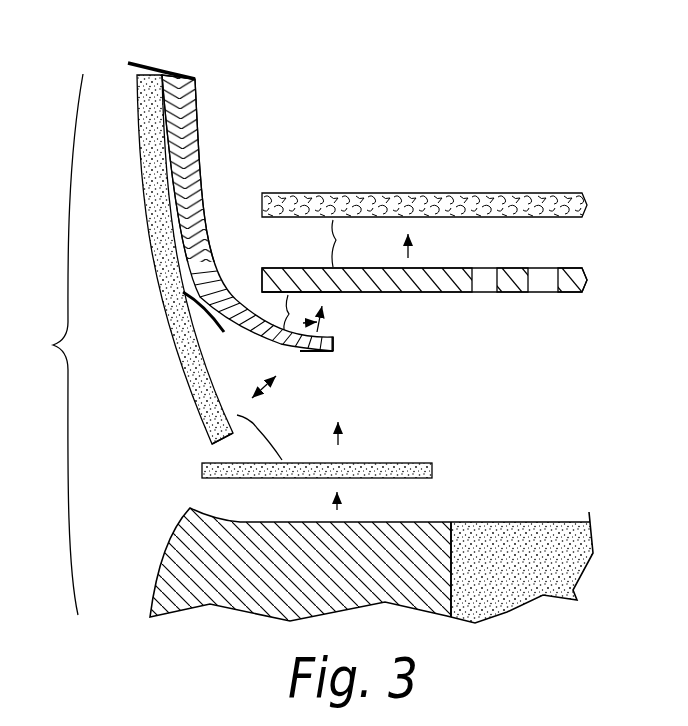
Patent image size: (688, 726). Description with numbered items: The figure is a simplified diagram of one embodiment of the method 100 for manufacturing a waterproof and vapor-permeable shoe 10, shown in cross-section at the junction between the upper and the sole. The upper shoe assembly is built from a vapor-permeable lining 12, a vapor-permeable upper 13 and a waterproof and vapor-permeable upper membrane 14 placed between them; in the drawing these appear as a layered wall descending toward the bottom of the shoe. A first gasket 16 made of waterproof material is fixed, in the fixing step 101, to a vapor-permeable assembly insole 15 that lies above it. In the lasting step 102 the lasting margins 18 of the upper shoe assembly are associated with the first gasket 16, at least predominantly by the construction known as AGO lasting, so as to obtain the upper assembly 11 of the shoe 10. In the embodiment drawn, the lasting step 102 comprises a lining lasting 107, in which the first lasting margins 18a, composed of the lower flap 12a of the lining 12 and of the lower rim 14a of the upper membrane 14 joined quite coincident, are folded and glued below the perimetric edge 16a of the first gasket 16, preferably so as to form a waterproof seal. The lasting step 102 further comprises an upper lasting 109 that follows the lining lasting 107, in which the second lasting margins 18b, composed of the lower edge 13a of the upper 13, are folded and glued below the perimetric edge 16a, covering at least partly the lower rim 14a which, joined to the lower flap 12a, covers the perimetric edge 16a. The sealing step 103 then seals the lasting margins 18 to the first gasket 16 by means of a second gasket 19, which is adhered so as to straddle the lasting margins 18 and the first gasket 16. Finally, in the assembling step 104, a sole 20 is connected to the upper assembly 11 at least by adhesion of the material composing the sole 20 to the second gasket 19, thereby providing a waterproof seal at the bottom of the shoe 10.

The waterproof and vapor-permeable shoe 10 is at (52, 344).
The upper assembly 11 is at (418, 162).
The vapor-permeable lining 12 is at (197, 117).
The lower flap of the lining 12a is at (210, 293).
The vapor-permeable upper 13 is at (140, 169).
The lower edge of the upper 13a is at (220, 445).
The waterproof and vapor-permeable upper membrane 14 is at (165, 71).
The lower rim of the upper membrane 14a is at (312, 356).
The vapor-permeable assembly insole 15 is at (523, 192).
The first gasket 16 is at (524, 267).
The perimetric edge of the first gasket 16a is at (293, 282).
The lasting margins 18 is at (243, 445).
The first lasting margins 18a is at (338, 336).
The second lasting margins 18b is at (208, 430).
The second gasket 19 is at (430, 462).
The sole 20 is at (150, 597).
The method for manufacturing a waterproof and vapor-permeable shoe 100 is at (455, 125).
The fixing 101 is at (415, 254).
The lasting 102 is at (301, 322).
The sealing 103 is at (336, 444).
The assembling 104 is at (342, 510).
The lining lasting 107 is at (325, 312).
The upper lasting 109 is at (250, 392).